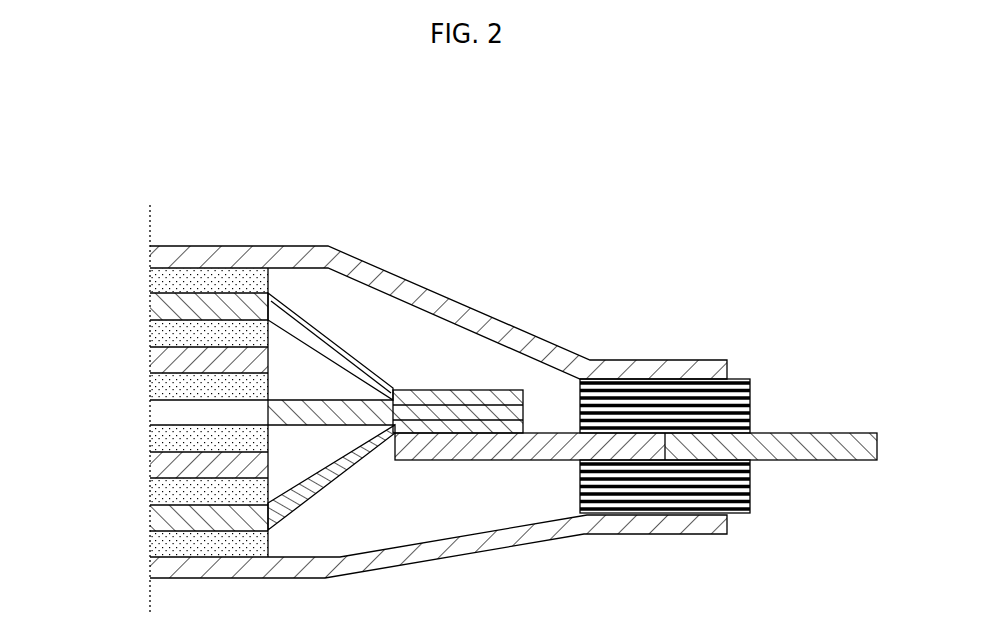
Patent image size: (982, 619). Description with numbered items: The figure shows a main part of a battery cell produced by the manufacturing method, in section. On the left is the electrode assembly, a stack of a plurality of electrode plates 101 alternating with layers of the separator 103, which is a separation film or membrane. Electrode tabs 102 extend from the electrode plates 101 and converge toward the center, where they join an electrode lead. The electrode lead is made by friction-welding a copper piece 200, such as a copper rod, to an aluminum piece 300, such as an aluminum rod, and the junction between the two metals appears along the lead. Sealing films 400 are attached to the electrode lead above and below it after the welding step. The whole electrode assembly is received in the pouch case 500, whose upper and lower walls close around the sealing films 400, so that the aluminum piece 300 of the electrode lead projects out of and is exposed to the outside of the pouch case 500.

The electrode plates 101 is at (149, 309).
The electrode tabs 102 is at (505, 388).
The separator 103 is at (177, 333).
The copper piece 200 is at (543, 462).
The aluminum piece 300 is at (832, 462).
The sealing films 400 is at (748, 380).
The pouch case 500 is at (410, 280).